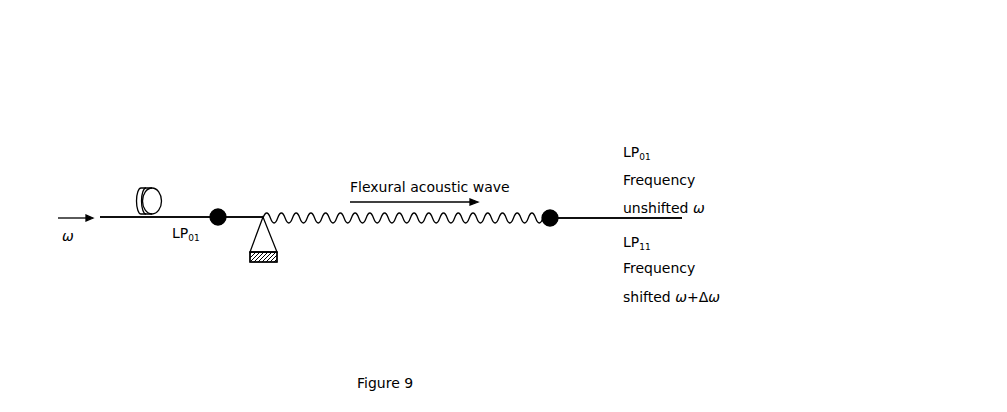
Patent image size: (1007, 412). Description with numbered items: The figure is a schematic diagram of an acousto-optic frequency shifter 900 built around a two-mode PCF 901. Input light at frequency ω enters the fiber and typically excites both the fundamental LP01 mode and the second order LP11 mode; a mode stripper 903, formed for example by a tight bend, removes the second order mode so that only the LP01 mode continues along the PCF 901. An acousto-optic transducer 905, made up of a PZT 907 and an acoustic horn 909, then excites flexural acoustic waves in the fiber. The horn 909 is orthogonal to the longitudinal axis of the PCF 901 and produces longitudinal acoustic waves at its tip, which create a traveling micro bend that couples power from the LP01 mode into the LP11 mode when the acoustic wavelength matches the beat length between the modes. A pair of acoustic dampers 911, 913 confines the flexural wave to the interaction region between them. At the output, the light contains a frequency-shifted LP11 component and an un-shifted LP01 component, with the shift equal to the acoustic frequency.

The acousto-optic frequency shifter 900 is at (505, 105).
The two-mode PCF 901 is at (183, 215).
The mode stripper 903 is at (133, 196).
The acousto-optic transducer 905 is at (266, 268).
The PZT 907 is at (250, 258).
The acoustic horn 909 is at (255, 238).
The acoustic damper 911 is at (228, 214).
The acoustic damper 913 is at (551, 226).